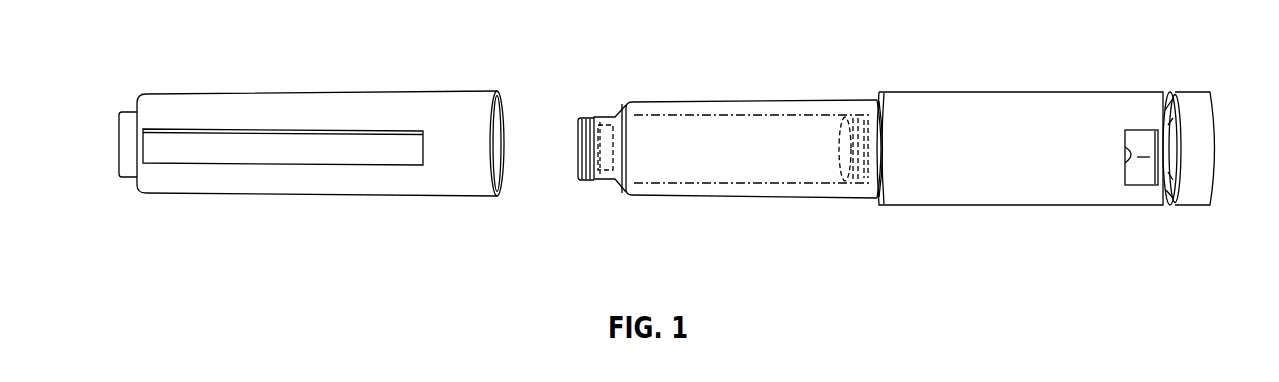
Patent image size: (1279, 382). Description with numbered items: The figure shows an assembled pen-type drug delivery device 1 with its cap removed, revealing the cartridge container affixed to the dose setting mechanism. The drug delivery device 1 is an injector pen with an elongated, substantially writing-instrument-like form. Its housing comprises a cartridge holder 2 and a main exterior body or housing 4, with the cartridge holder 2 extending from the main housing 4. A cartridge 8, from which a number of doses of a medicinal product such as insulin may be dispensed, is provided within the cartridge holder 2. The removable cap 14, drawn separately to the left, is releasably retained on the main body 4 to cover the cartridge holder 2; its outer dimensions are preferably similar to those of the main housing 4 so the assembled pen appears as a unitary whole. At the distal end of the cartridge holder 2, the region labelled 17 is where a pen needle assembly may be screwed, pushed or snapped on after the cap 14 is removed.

The drug delivery device 1 is at (667, 174).
The cartridge holder 2 is at (712, 145).
The main body 4 is at (982, 207).
The cartridge 8 is at (727, 162).
The removable cap 14 is at (366, 104).
The needle connection / distal end 17 is at (590, 182).